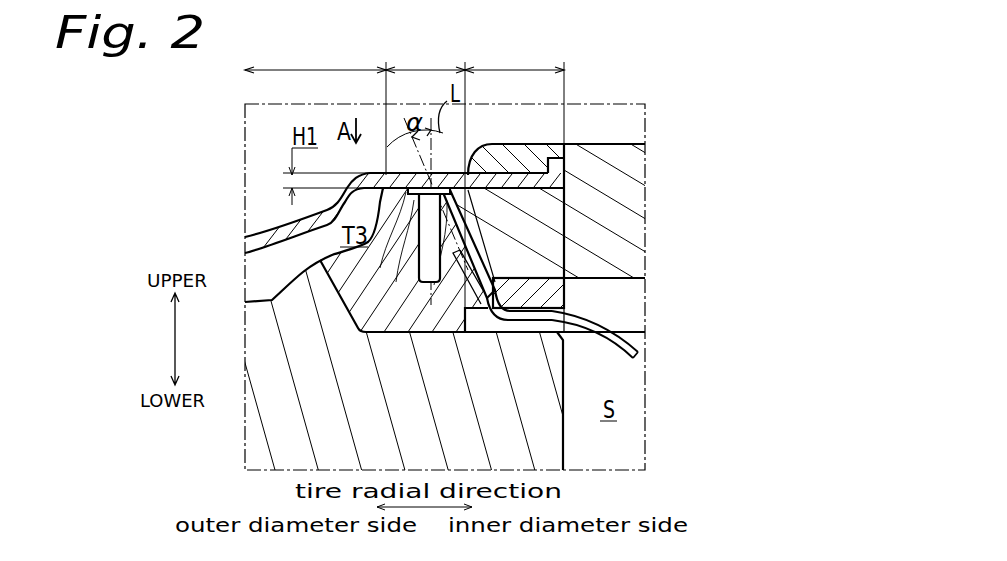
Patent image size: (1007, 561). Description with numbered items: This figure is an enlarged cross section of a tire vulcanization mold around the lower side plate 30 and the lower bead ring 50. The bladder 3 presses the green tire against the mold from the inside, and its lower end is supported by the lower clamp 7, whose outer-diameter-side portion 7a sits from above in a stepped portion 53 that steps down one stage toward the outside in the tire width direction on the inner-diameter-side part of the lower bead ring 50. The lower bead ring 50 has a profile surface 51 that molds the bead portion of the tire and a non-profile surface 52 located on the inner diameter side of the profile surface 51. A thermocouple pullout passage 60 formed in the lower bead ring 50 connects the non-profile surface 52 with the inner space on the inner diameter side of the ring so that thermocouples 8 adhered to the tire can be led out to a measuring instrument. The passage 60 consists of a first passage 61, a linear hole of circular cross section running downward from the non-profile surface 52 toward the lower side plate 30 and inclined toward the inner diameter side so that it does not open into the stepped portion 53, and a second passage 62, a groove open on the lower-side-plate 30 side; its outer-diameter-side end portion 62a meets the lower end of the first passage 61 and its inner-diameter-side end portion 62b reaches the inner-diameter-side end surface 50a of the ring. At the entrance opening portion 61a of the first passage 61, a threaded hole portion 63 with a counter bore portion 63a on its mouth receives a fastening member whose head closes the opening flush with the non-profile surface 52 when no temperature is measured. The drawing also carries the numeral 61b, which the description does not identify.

The bladder 3 is at (248, 246).
The lower clamp 7 is at (603, 144).
The outer-diameter-side portion 7a is at (503, 157).
The thermocouple 8 is at (641, 353).
The lower side plate 30 is at (252, 428).
The lower bead ring 50 is at (333, 322).
The inner-diameter-side end surface 50a is at (578, 282).
The profile surface 51 is at (315, 60).
The non-profile surface 52 is at (425, 60).
The stepped portion 53 is at (514, 60).
The thermocouple pullout passage 60 is at (397, 398).
The first passage 61 is at (431, 283).
The entrance opening portion 61a is at (465, 203).
The pin tip portion 61b is at (493, 278).
The second passage 62 is at (515, 333).
The outer-diameter-side end portion 62a is at (465, 334).
The inner-diameter-side end portion 62b is at (578, 316).
The threaded hole portion 63 is at (434, 257).
The counter bore portion 63a is at (347, 294).